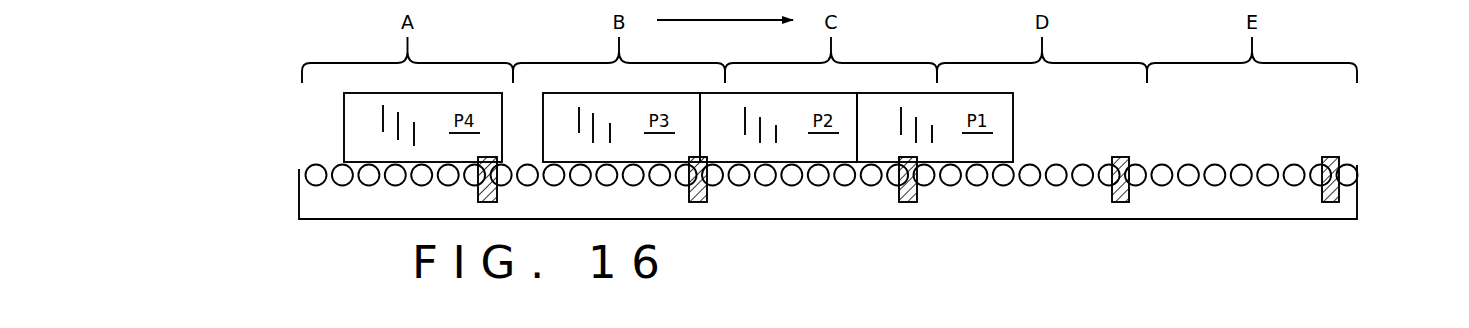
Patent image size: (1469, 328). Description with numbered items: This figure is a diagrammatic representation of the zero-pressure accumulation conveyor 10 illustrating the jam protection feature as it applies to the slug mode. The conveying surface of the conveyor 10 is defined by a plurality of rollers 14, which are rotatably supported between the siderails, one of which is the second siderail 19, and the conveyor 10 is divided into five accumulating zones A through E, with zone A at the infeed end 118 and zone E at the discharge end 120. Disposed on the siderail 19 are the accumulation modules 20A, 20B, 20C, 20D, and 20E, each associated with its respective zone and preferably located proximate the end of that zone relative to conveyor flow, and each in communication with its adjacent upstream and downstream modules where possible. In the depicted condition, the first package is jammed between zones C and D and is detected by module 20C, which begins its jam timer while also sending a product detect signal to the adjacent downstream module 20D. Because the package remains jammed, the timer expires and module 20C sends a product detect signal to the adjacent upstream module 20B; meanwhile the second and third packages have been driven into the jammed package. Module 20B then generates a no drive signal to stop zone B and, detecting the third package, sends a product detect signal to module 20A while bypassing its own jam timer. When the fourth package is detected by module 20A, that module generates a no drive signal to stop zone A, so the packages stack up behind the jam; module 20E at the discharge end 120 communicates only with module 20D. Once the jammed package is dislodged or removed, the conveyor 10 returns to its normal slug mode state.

The zero-pressure accumulation conveyor 10 is at (1372, 59).
The rollers 14 is at (311, 169).
The second siderail 19 is at (346, 207).
The accumulation module 20A is at (478, 199).
The accumulation module 20B is at (689, 198).
The accumulation module 20C is at (899, 199).
The accumulation module 20D is at (1112, 190).
The accumulation module 20E is at (1322, 192).
The infeed end 118 is at (288, 180).
The discharge end 120 is at (1372, 177).